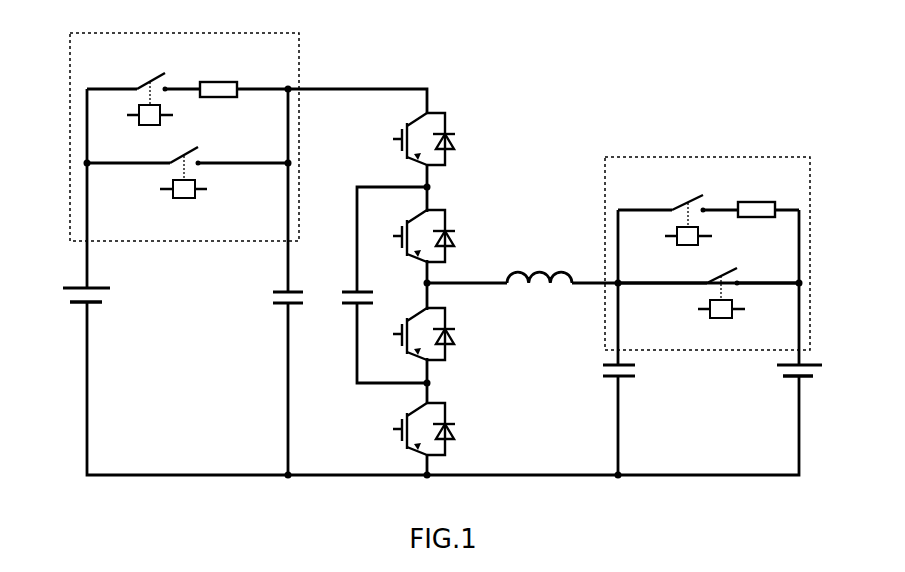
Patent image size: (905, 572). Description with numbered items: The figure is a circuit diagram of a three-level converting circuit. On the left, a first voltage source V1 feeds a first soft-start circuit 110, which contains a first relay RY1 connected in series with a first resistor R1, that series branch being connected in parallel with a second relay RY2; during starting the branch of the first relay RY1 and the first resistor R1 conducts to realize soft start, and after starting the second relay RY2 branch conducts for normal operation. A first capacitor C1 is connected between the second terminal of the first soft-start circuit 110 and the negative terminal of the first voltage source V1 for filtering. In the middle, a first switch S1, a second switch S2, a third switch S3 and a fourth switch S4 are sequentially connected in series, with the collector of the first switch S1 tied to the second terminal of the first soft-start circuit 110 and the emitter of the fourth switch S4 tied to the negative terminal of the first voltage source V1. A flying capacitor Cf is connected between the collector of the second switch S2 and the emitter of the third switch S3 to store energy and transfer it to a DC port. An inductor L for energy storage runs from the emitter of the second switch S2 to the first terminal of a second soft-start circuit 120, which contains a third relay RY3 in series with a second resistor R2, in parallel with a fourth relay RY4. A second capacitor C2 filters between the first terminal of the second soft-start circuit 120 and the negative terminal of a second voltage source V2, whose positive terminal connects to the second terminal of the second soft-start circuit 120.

The first soft-start circuit 110 is at (184, 124).
The second soft-start circuit 120 is at (707, 240).
The first relay RY1 is at (145, 86).
The second relay RY2 is at (183, 190).
The third relay RY3 is at (683, 206).
The fourth relay RY4 is at (721, 310).
The first resistor R1 is at (218, 72).
The second resistor R2 is at (756, 192).
The first capacitor C1 is at (274, 287).
The second capacitor C2 is at (602, 375).
The flying capacitor Cf is at (348, 287).
The first voltage source V1 is at (74, 295).
The second voltage source V2 is at (815, 375).
The inductor L is at (539, 265).
The first switch S1 is at (437, 139).
The second switch S2 is at (437, 236).
The third switch S3 is at (437, 334).
The fourth switch S4 is at (437, 429).